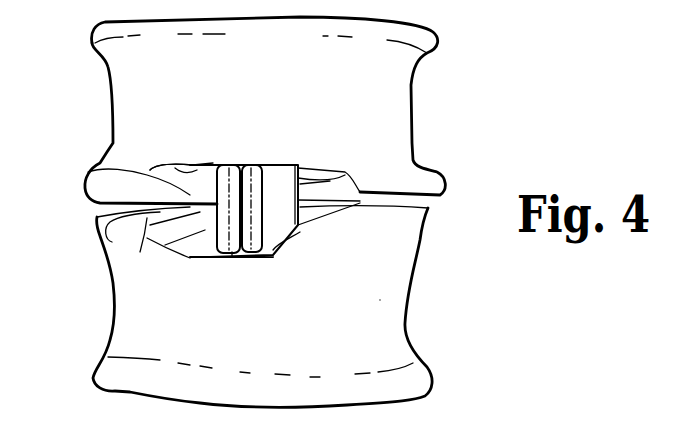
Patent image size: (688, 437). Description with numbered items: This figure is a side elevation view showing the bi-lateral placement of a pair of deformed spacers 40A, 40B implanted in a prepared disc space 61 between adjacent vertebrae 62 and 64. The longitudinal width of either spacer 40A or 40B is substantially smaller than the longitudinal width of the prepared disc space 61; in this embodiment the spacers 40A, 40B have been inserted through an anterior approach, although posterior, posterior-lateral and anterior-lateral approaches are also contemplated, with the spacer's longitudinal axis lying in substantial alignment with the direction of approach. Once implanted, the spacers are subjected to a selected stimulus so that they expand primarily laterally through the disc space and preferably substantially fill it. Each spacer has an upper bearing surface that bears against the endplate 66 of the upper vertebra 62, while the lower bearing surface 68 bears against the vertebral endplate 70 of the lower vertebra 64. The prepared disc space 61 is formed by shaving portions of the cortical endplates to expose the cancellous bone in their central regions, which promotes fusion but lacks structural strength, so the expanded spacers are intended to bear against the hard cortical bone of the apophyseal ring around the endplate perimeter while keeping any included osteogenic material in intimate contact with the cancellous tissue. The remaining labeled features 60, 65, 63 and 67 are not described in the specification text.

The spinal motion segment with implant 60 is at (490, 103).
The vertebra 62 is at (261, 79).
The vertebra 64 is at (268, 350).
The spacer 40A is at (300, 184).
The spacer 40B is at (108, 166).
The implant keel 65 is at (257, 164).
The endplate 66 is at (185, 166).
The lower endplate of implant 63 is at (135, 239).
The prepared disc space 61 is at (137, 242).
The vertebral endplate 70 is at (200, 258).
The keel base 67 is at (243, 258).
The lower bearing surface 68 is at (268, 257).